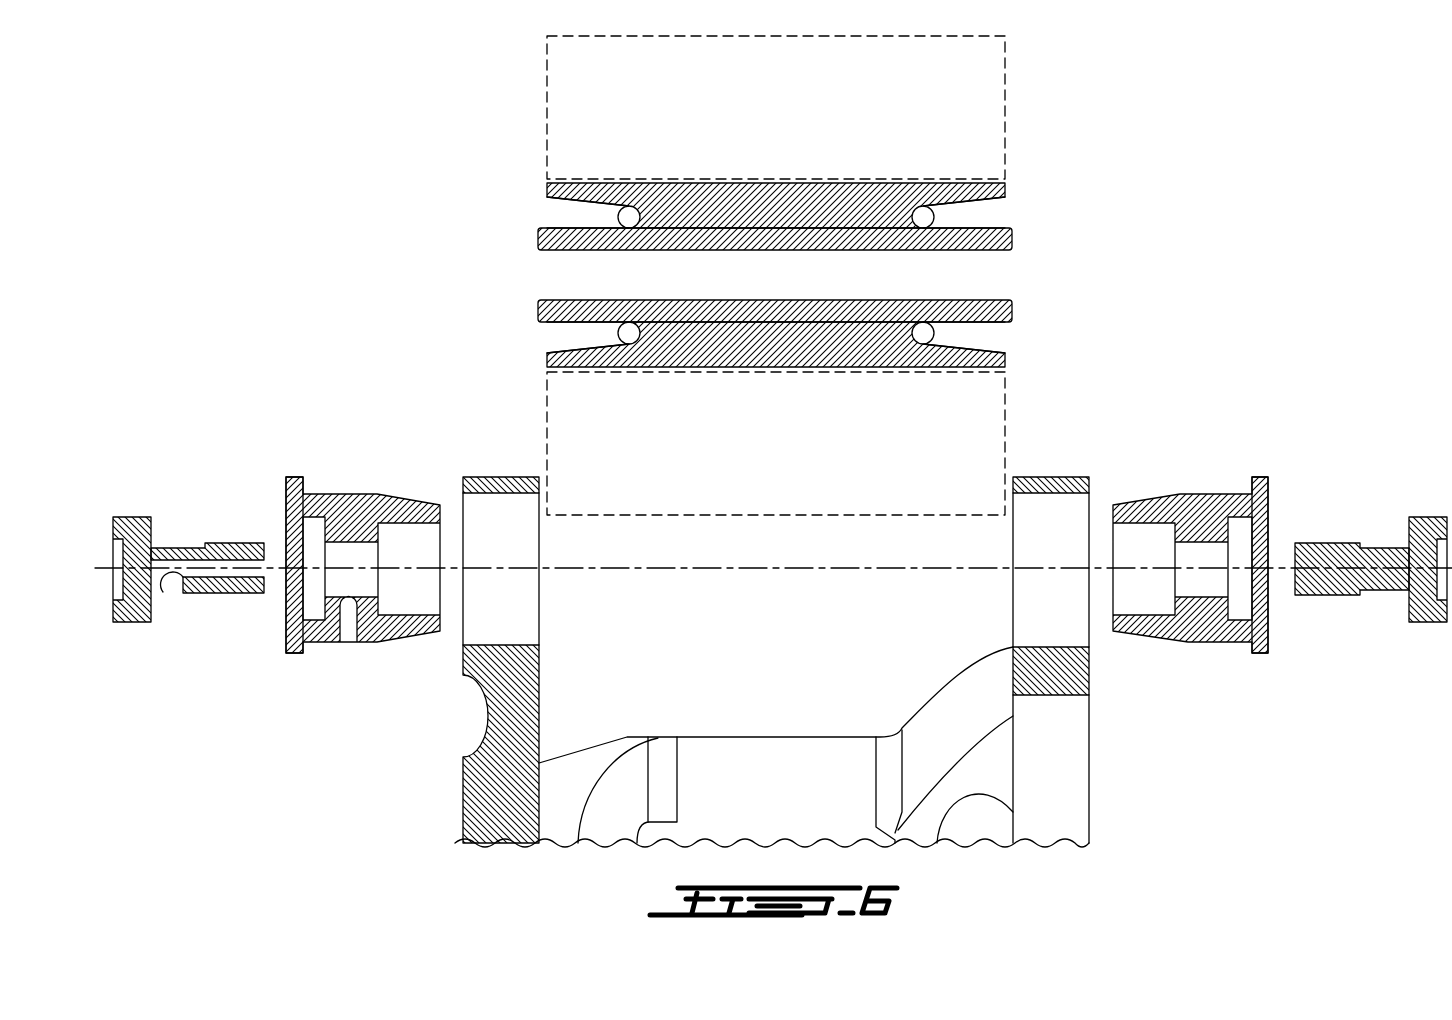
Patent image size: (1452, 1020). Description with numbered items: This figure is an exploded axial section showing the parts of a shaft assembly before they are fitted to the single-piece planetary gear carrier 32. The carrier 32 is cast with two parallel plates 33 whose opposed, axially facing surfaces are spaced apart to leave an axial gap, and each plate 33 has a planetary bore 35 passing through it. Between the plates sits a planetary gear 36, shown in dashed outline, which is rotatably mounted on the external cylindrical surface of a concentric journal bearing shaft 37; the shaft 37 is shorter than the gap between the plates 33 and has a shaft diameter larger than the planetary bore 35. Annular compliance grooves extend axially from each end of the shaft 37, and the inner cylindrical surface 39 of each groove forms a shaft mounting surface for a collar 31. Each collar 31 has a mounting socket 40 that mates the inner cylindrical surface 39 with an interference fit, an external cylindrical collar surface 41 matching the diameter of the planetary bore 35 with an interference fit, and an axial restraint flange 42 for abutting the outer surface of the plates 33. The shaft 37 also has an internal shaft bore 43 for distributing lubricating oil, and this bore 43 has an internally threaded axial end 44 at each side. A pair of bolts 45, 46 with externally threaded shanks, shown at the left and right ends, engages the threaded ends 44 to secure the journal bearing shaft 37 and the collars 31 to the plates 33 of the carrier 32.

The collar 31 is at (785, 514).
The planetary gear carrier 32 is at (490, 800).
The plates 33 is at (500, 477).
The planetary bore 35 is at (505, 593).
The planetary gear 36 is at (781, 99).
The journal bearing shaft 37 is at (830, 215).
The inner cylindrical surface 39 is at (568, 217).
The mounting socket 40 is at (408, 587).
The external cylindrical collar surface 41 is at (348, 477).
The axial restraint flange 42 is at (286, 490).
The internal shaft bore 43 is at (691, 278).
The internally threaded axial end 44 is at (573, 250).
The bolt 45 is at (132, 517).
The bolt 46 is at (1425, 517).